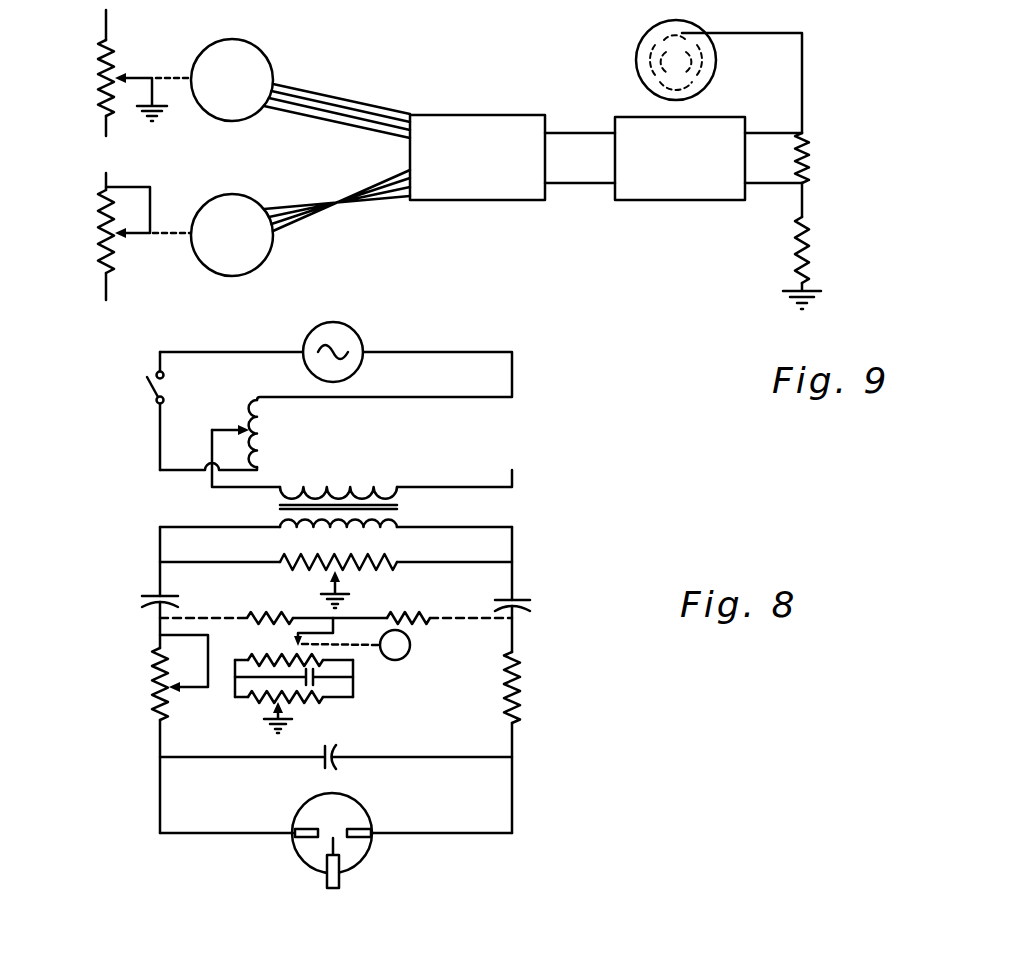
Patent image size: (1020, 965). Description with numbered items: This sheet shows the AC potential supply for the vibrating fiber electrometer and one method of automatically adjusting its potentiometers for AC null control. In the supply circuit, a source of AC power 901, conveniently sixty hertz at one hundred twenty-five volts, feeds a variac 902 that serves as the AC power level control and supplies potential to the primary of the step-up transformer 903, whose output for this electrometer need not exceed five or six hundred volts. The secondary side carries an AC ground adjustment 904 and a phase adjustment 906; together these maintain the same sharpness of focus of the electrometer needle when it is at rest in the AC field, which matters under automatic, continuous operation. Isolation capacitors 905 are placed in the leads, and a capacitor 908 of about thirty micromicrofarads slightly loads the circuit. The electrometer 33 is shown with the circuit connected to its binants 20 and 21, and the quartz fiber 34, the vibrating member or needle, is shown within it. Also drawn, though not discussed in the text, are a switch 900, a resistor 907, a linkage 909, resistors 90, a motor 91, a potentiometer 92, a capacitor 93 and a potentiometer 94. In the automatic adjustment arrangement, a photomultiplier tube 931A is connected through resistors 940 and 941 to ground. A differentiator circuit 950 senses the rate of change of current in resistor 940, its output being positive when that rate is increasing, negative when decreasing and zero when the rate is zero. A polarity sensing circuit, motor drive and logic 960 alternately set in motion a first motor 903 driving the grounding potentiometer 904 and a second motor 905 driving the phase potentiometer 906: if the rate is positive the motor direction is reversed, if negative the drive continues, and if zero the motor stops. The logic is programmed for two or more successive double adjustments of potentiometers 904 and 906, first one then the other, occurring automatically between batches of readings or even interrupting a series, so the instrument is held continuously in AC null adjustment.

In FIG. 8, the binant 20 is at (361, 816).
In FIG. 8, the binant 21 is at (308, 816).
In FIG. 8, the electrometer 33 is at (362, 853).
In FIG. 8, the quartz fiber 34 is at (318, 851).
In FIG. 8, the resistor 90 is at (266, 610).
In FIG. 8, the motor 91 is at (411, 645).
In FIG. 8, the potentiometer 92 is at (266, 652).
In FIG. 8, the capacitor 93 is at (354, 677).
In FIG. 8, the potentiometer 94 is at (256, 700).
In FIG. 8, the switch 900 is at (150, 388).
In FIG. 8, the source of AC power 901 is at (348, 334).
In FIG. 8, the variac 902 is at (250, 430).
In FIG. 9, the step-up transformer 903 is at (256, 58).
In FIG. 8, the step-up transformer 903 is at (521, 482).
In FIG. 9, the ground adjustment potentiometer 904 is at (97, 99).
In FIG. 8, the ground adjustment potentiometer 904 is at (384, 572).
In FIG. 9, the isolation capacitors 905 is at (262, 257).
In FIG. 8, the isolation capacitors 905 is at (143, 594).
In FIG. 9, the phase adjustment potentiometer 906 is at (97, 254).
In FIG. 8, the phase adjustment potentiometer 906 is at (155, 701).
In FIG. 8, the resistor 907 is at (521, 679).
In FIG. 8, the capacitor 908 is at (330, 740).
In FIG. 8, the mechanical linkage 909 is at (158, 619).
In FIG. 9, the photomultiplier tube 931A is at (647, 45).
In FIG. 9, the resistor 940 is at (806, 165).
In FIG. 9, the resistor 941 is at (806, 258).
In FIG. 9, the differentiator circuit 950 is at (643, 127).
In FIG. 9, the polarity sensing and motor drive circuit 960 is at (496, 100).